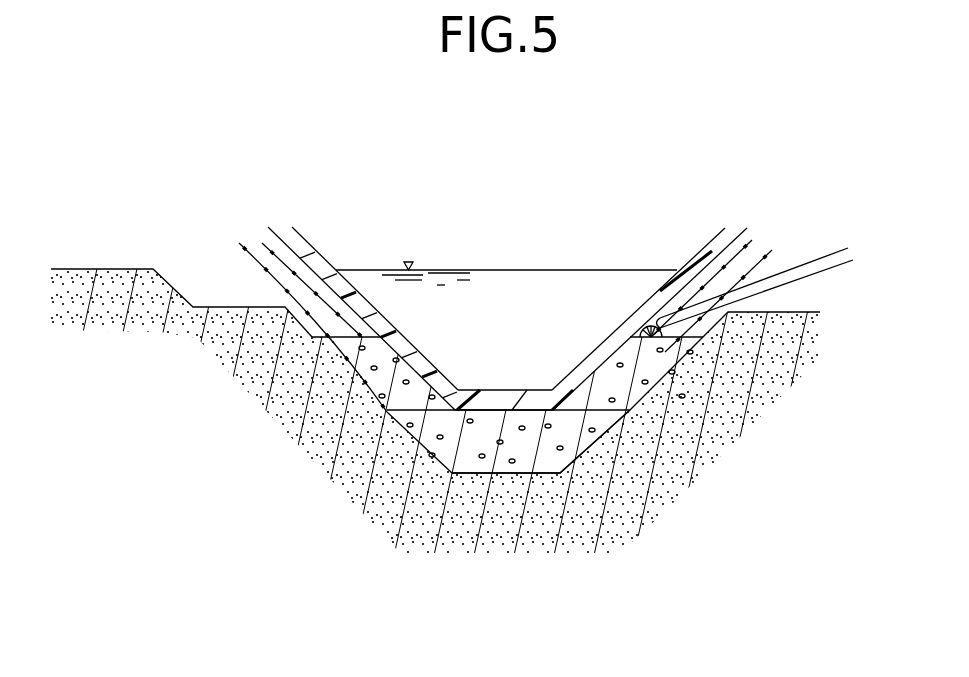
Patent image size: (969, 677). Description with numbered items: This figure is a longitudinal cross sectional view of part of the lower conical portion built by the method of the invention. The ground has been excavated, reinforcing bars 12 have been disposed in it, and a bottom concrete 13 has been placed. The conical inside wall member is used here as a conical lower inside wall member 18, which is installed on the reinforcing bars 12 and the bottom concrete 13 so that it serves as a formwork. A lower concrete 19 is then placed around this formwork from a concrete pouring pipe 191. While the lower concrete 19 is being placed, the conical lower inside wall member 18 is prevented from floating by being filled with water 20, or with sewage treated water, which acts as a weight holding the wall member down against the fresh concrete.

The reinforcing bars 12 is at (745, 251).
The bottom concrete 13 is at (570, 443).
The conical lower inside wall member 18 is at (321, 264).
The lower concrete 19 is at (657, 363).
The concrete pouring pipe 191 is at (812, 270).
The water 20 is at (568, 268).